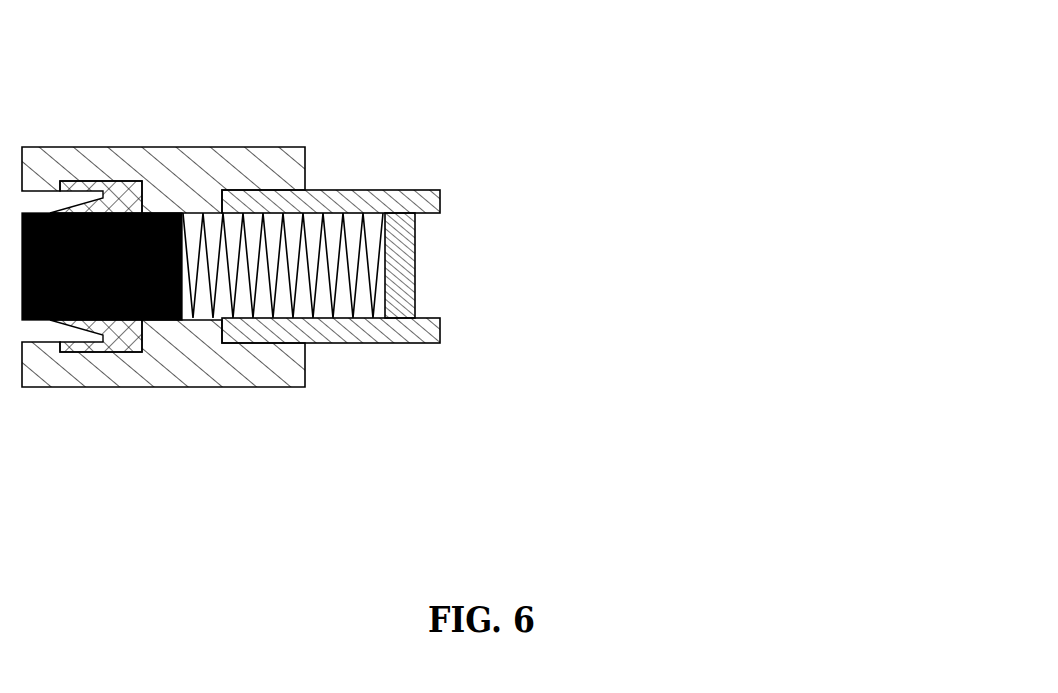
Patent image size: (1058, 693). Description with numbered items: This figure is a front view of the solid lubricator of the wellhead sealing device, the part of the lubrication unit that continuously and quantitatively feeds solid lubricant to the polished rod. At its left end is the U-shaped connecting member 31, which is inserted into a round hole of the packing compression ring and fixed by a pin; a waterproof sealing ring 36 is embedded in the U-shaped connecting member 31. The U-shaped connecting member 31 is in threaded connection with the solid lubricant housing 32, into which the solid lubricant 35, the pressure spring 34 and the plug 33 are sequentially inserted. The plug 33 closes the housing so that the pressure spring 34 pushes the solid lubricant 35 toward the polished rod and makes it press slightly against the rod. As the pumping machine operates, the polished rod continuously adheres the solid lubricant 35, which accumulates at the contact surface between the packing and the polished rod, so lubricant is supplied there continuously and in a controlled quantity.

The U-shaped connecting member 31 is at (477, 119).
The solid lubricant housing 32 is at (577, 222).
The plug 33 is at (415, 240).
The pressure spring 34 is at (415, 305).
The solid lubricant 35 is at (557, 331).
The waterproof sealing ring 36 is at (477, 431).